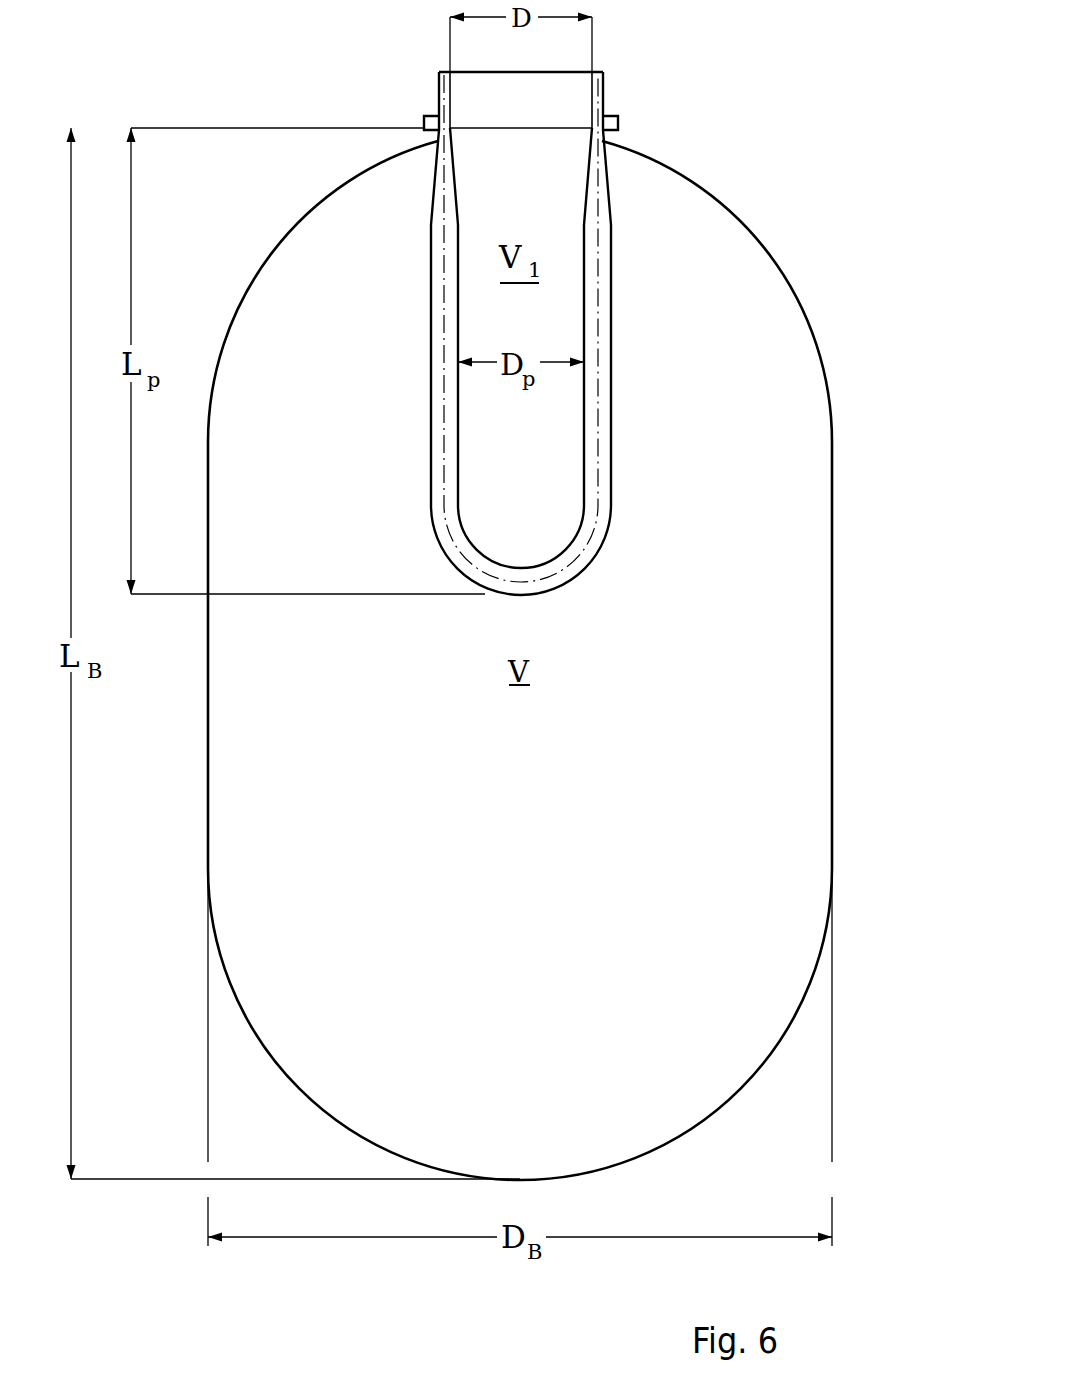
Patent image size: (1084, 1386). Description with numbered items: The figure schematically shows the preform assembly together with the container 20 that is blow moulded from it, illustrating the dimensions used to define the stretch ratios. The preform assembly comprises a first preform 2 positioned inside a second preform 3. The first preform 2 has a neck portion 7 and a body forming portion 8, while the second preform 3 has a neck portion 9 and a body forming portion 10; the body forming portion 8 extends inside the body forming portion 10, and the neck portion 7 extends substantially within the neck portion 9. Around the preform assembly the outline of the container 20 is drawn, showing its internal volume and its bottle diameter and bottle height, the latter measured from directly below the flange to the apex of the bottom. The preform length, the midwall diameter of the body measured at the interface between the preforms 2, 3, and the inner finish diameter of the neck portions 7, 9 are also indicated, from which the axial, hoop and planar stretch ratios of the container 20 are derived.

The first preform 2 is at (642, 496).
The second preform 3 is at (697, 507).
The neck portion 7 is at (615, 88).
The neck portion 9 is at (672, 72).
The body forming portion 8 is at (615, 421).
The body forming portion 10 is at (670, 405).
The container 20 is at (850, 388).